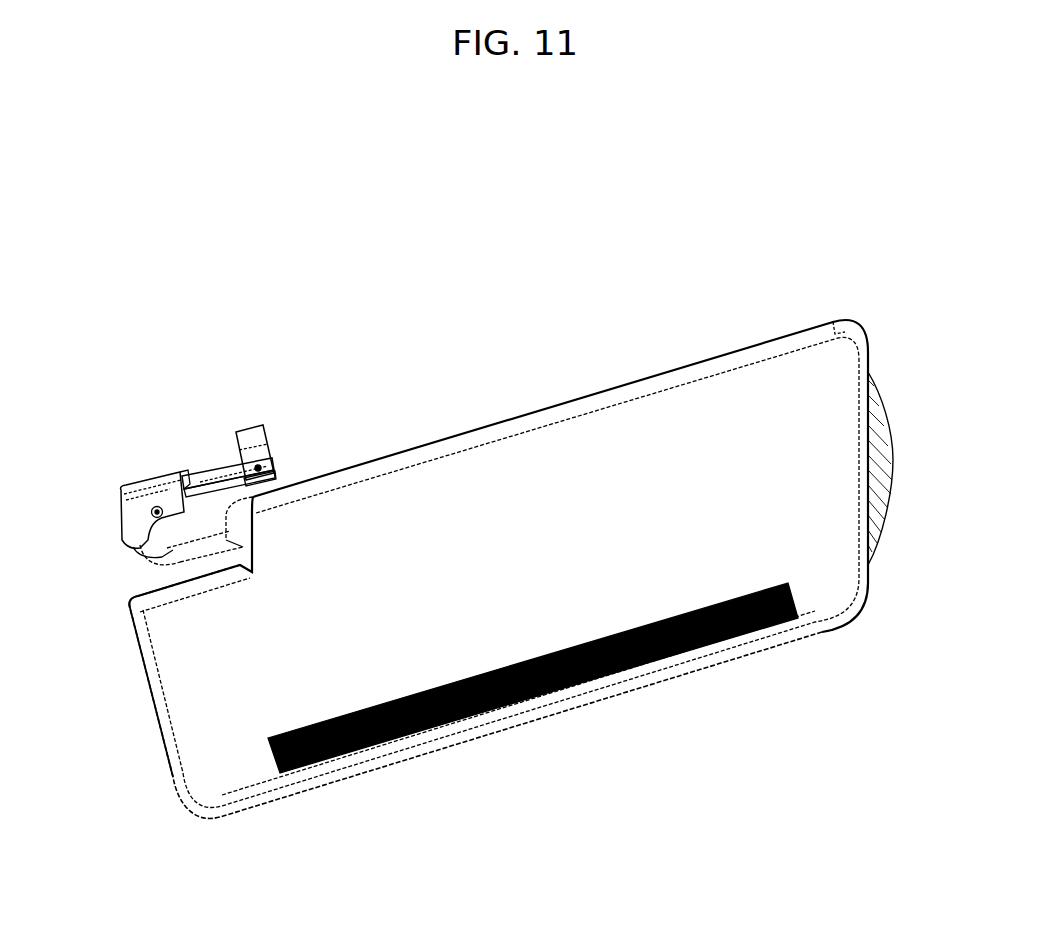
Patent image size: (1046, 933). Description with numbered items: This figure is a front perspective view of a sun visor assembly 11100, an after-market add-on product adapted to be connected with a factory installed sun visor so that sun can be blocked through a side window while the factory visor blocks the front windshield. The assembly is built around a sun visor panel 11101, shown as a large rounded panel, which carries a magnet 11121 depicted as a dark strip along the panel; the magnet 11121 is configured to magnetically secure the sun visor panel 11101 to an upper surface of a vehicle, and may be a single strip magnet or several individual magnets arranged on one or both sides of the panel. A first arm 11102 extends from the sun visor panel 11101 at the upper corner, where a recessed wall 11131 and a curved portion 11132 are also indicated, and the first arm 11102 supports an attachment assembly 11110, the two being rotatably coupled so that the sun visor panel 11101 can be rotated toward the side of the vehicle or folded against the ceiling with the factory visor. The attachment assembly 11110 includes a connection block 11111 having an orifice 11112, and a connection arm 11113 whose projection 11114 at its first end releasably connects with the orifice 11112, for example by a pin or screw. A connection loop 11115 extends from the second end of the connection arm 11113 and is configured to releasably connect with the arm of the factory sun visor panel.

The sun visor assembly 11100 is at (156, 183).
The sun visor panel 11101 is at (627, 692).
The first arm 11102 is at (185, 565).
The attachment assembly 11110 is at (90, 383).
The connection block 11111 is at (127, 483).
The orifice 11112 is at (183, 465).
The connection arm 11113 is at (245, 483).
The projection 11114 is at (203, 477).
The connection loop 11115 is at (262, 448).
The magnet 11121 is at (347, 752).
The recess wall 11131 is at (212, 550).
The recess curved portion 11132 is at (162, 560).